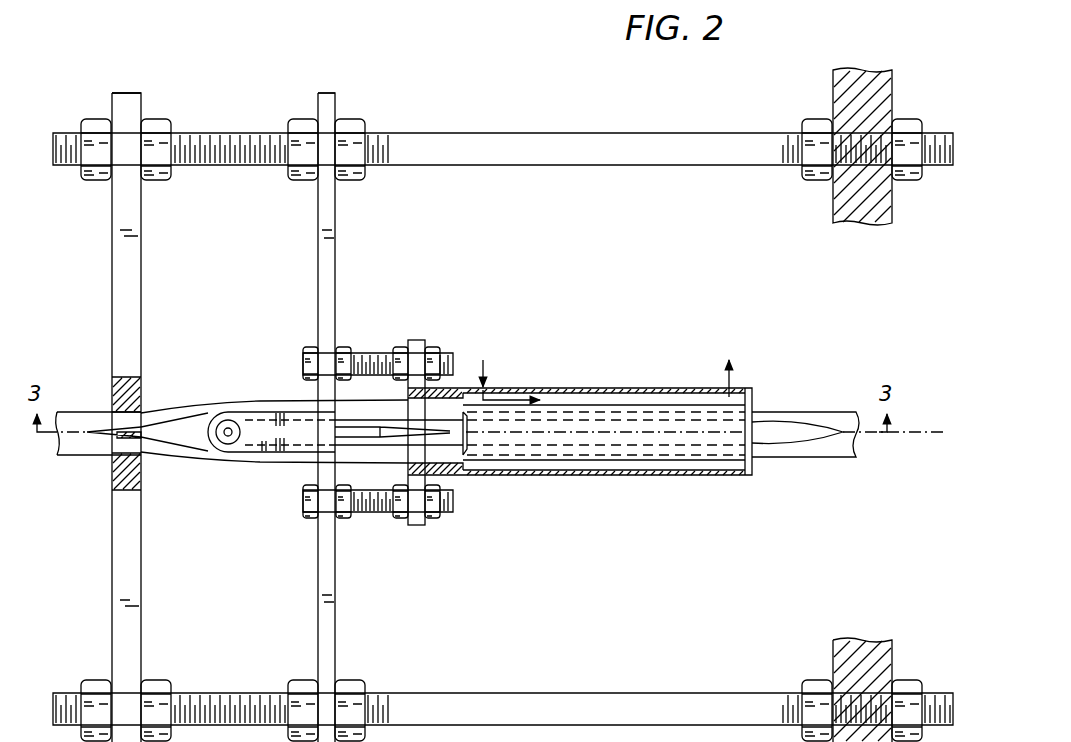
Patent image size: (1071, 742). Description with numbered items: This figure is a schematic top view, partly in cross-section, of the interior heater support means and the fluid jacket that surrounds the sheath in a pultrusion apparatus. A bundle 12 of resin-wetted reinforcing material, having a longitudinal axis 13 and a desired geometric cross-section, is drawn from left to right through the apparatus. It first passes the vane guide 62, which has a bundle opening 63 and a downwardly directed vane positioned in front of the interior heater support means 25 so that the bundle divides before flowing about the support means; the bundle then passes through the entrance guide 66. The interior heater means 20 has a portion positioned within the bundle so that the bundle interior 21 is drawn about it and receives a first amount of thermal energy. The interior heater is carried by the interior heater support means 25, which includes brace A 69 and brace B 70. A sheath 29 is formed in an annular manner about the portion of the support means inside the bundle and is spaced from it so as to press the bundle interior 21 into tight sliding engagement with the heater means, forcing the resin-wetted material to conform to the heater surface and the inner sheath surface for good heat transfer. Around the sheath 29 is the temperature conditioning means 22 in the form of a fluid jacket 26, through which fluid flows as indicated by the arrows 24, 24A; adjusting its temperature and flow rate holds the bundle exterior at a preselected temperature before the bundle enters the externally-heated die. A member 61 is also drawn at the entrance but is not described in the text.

The interior heater means 20 is at (208, 65).
The interior heater support means 25 is at (478, 85).
The push bar 61 is at (84, 411).
The vane guide 62 is at (141, 346).
The bundle opening 63 is at (112, 455).
The entrance guide 66 is at (320, 462).
The bundle interior 21 is at (190, 440).
The brace A 69 is at (256, 410).
The brace B 70 is at (370, 438).
The sheath 29 is at (658, 470).
The temperature conditioning means 22 is at (608, 387).
The fluid jacket 26 is at (567, 476).
The arrow 24 is at (484, 360).
The arrow 24A is at (731, 368).
The bundle 12 is at (825, 458).
The longitudinal axis 13 is at (920, 434).